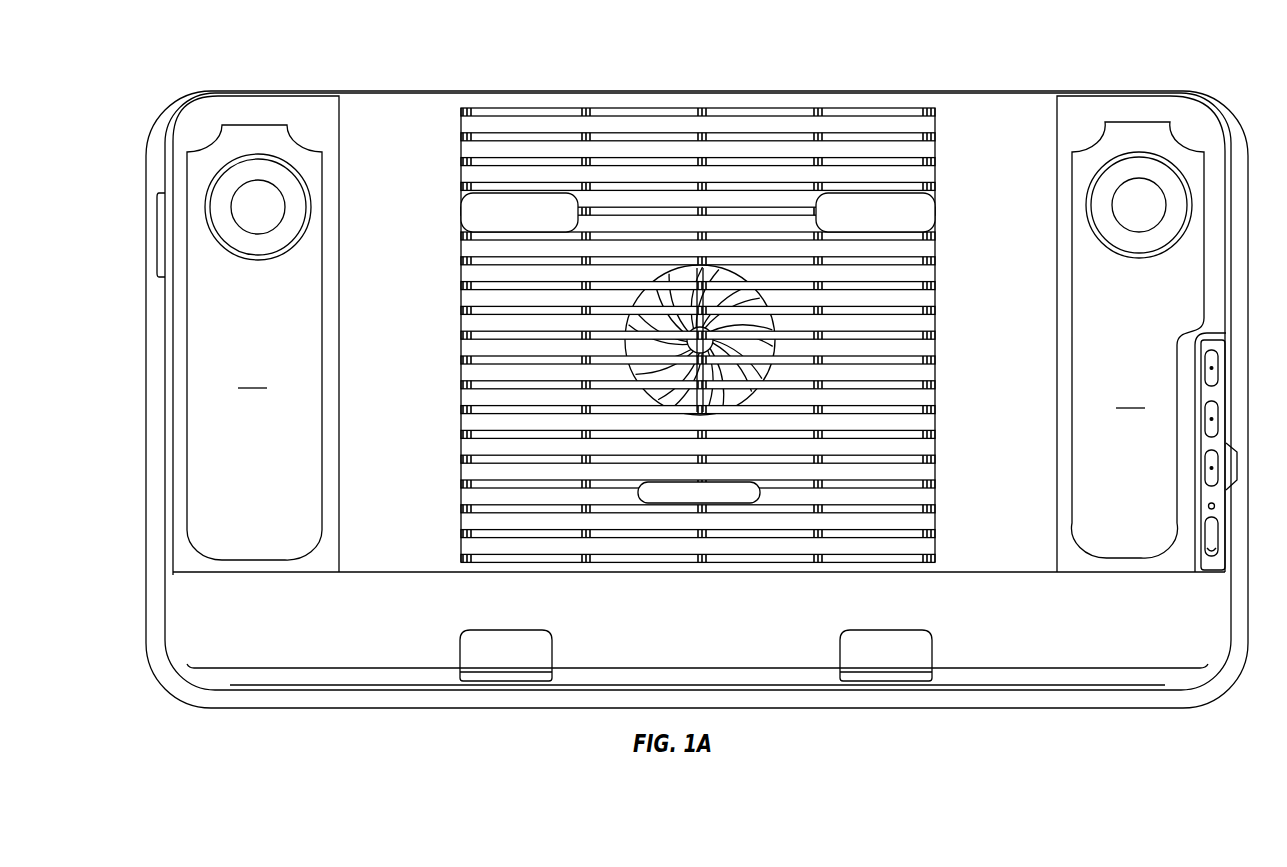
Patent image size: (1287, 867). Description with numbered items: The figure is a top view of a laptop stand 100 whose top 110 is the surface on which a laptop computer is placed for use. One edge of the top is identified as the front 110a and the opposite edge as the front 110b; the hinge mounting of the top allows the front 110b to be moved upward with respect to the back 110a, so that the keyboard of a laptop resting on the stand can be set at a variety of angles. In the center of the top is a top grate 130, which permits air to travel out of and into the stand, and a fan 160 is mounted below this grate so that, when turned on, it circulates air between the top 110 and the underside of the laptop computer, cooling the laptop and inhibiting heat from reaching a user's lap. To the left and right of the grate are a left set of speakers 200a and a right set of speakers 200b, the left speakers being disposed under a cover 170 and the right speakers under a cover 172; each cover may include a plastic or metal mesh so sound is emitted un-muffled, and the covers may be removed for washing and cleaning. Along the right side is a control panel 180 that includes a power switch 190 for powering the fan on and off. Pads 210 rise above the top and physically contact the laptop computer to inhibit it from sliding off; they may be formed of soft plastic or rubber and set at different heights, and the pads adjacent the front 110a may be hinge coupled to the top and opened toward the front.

The laptop stand 100 is at (98, 557).
The top 110 is at (415, 91).
The front of the top 110a is at (138, 643).
The front of the top 110b is at (135, 90).
The top grate 130 is at (935, 335).
The fan 160 is at (627, 343).
The cover 170 is at (254, 342).
The cover 172 is at (1138, 340).
The control panel 180 is at (1218, 443).
The power switch 190 is at (1218, 540).
The left set of speakers 200a is at (258, 261).
The right set of speakers 200b is at (1139, 259).
The pads 210 is at (461, 212).